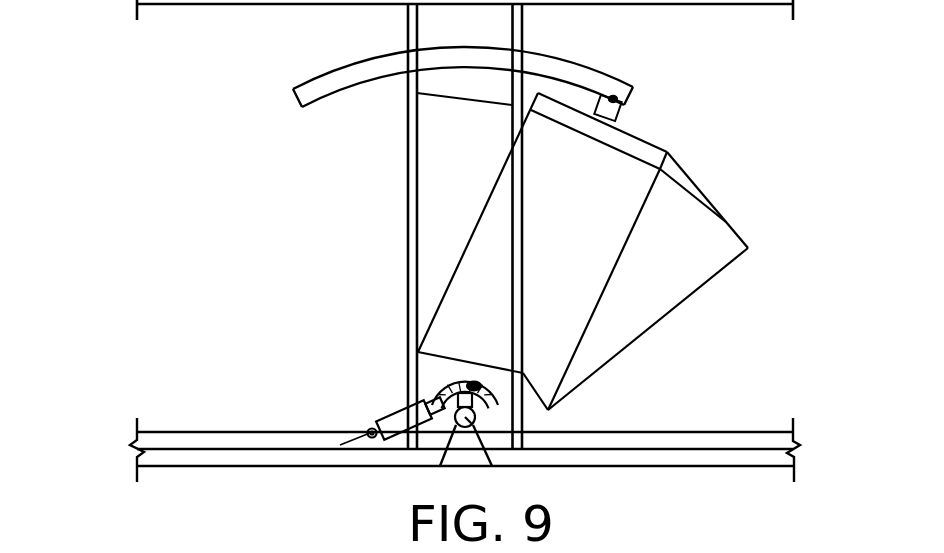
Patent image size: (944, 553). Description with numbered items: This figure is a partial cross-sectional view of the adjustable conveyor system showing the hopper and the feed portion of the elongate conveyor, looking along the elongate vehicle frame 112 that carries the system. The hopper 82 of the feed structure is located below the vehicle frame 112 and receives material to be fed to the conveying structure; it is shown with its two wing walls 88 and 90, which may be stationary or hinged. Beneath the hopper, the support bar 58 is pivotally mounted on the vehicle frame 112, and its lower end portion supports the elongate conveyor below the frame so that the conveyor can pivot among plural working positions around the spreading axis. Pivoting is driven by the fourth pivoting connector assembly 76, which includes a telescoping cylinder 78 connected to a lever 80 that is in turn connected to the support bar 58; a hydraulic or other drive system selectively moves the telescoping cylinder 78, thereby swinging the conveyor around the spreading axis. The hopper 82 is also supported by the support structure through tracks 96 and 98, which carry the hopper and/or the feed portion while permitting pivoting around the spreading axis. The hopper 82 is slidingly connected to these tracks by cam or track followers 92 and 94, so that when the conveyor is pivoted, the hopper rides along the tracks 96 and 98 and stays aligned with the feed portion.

The support bar 58 is at (477, 423).
The fourth pivoting connector assembly 76 is at (362, 411).
The telescoping cylinder 78 is at (402, 423).
The lever 80 is at (477, 412).
The hopper 82 is at (688, 300).
The wing wall 88 is at (443, 192).
The wing wall 90 is at (673, 227).
The track follower 92 is at (478, 387).
The track follower 94 is at (625, 116).
The track 96 is at (483, 392).
The track 98 is at (558, 65).
The vehicle frame 112 is at (705, 455).